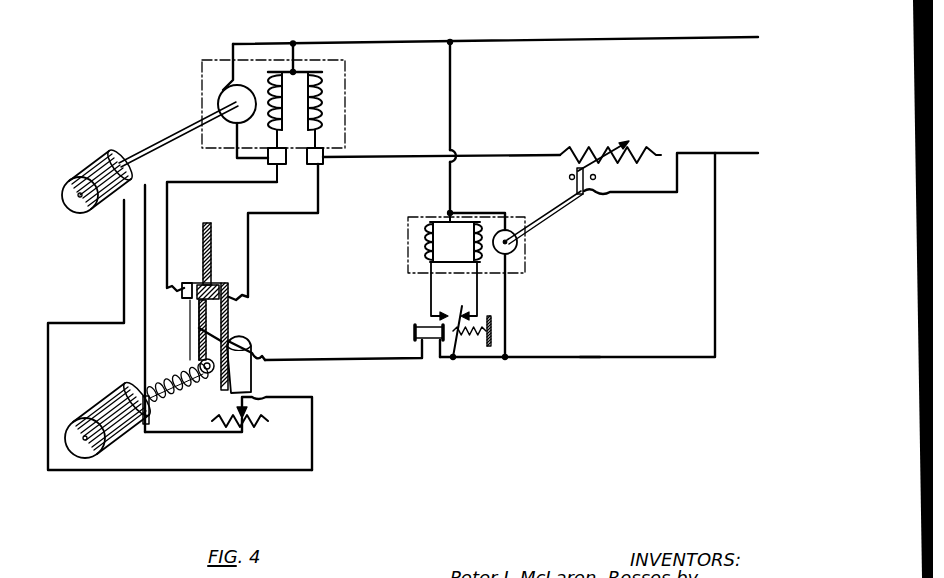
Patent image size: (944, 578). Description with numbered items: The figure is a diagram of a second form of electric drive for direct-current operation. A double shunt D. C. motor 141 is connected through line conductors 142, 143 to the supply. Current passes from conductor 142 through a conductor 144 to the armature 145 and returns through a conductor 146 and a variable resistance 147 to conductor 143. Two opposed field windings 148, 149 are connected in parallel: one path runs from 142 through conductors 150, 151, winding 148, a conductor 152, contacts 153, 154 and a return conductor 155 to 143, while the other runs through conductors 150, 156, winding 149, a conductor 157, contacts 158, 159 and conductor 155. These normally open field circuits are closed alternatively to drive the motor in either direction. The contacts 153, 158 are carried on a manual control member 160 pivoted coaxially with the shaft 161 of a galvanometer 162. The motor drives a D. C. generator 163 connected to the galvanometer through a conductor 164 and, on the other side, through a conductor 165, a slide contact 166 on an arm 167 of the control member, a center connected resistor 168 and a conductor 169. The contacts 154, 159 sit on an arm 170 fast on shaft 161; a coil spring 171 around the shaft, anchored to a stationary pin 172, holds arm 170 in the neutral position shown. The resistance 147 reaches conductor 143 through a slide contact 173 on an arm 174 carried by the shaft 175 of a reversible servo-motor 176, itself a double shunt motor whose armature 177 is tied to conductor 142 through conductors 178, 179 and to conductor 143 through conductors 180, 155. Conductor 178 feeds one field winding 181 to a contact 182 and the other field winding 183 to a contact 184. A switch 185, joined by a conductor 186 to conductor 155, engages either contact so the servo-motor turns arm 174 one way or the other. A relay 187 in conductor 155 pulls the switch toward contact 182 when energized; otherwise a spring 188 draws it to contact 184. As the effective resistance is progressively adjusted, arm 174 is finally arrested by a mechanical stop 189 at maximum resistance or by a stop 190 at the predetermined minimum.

The double shunt D. C. motor 141 is at (202, 94).
The line conductor 142 is at (540, 40).
The line conductor 143 is at (731, 153).
The conductor 144 is at (226, 48).
The armature 145 is at (217, 99).
The conductor 146 is at (377, 156).
The variable resistance 147 is at (573, 150).
The field winding 148 is at (270, 150).
The field winding 149 is at (324, 112).
The conductor 150 is at (294, 50).
The conductor 151 is at (272, 73).
The conductor 152 is at (198, 182).
The contact 153 is at (188, 283).
The contact 154 is at (197, 302).
The return conductor 155 is at (600, 356).
The conductor 156 is at (323, 68).
The conductor 157 is at (322, 200).
The contact 158 is at (229, 310).
The contact 159 is at (212, 284).
The manual control member 160 is at (201, 232).
The shaft 161 is at (158, 386).
The galvanometer 162 is at (96, 455).
The D. C. generator 163 is at (95, 165).
The conductor 164 is at (144, 341).
The conductor 165 is at (48, 323).
The slide contact 166 is at (248, 405).
The arm 167 is at (246, 373).
The center connected resistor 168 is at (260, 426).
The conductor 169 is at (173, 436).
The arm 170 is at (199, 325).
The coil spring 171 is at (200, 364).
The stationary pin 172 is at (150, 408).
The slide contact 173 is at (620, 138).
The arm 174 is at (577, 181).
The shaft 175 is at (562, 216).
The reversible servo-motor 176 is at (531, 268).
The armature 177 is at (519, 244).
The conductor 178 is at (452, 92).
The conductor 179 is at (474, 207).
The conductor 180 is at (511, 322).
The field winding 181 is at (424, 231).
The contact 182 is at (429, 291).
The field winding 183 is at (456, 242).
The contact 184 is at (476, 293).
The switch 185 is at (458, 336).
The conductor 186 is at (456, 360).
The relay 187 is at (421, 330).
The spring 188 is at (491, 311).
The mechanical stop 189 is at (596, 177).
The stop 190 is at (569, 176).